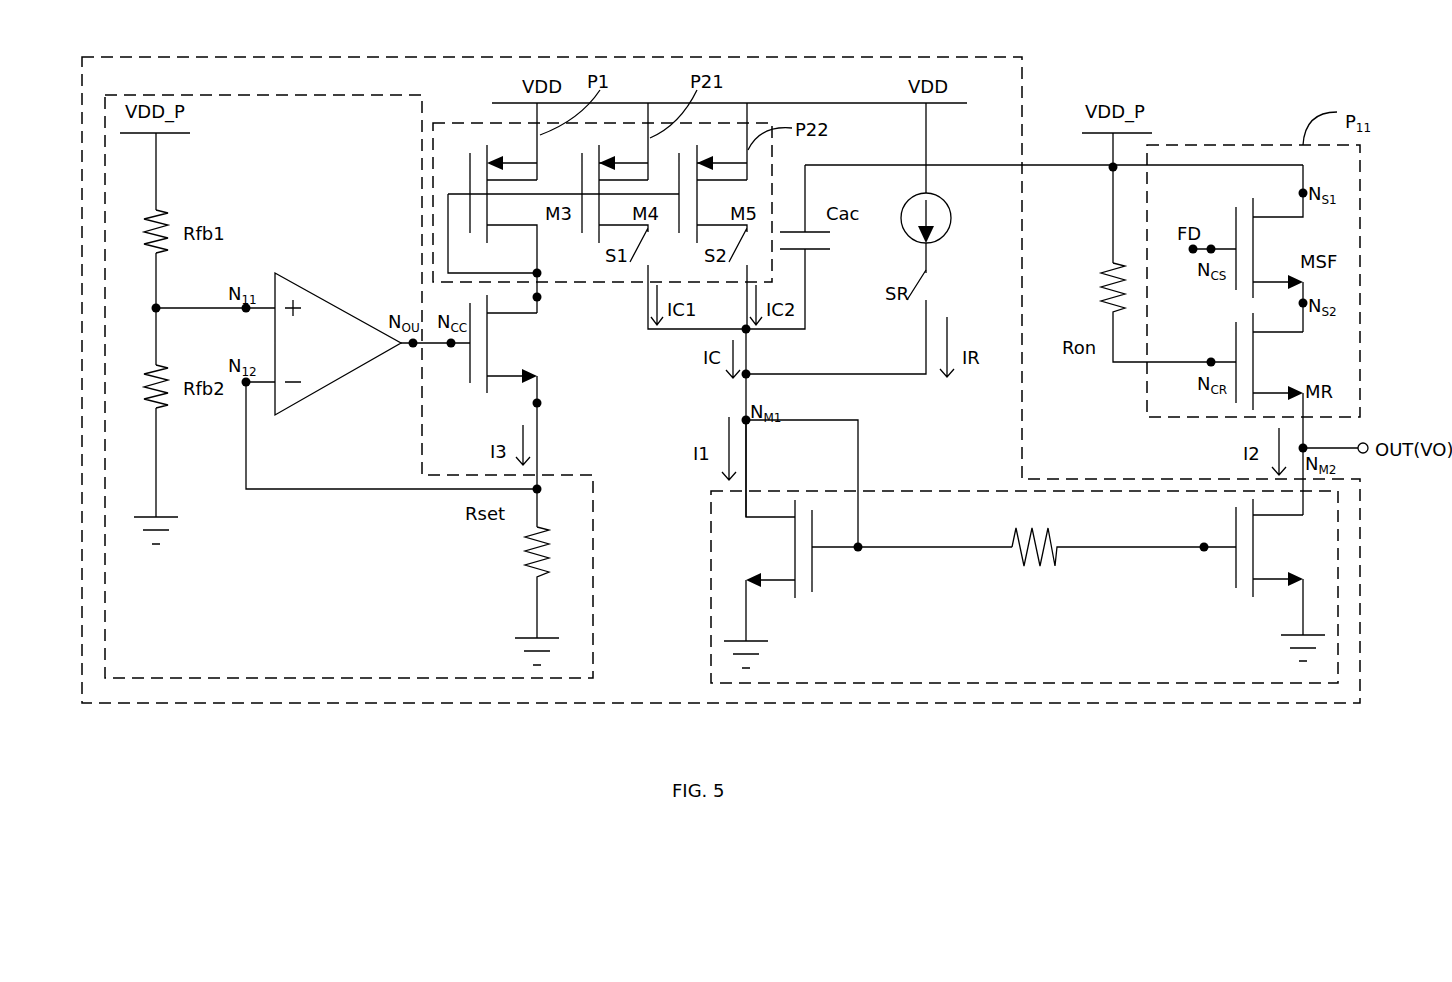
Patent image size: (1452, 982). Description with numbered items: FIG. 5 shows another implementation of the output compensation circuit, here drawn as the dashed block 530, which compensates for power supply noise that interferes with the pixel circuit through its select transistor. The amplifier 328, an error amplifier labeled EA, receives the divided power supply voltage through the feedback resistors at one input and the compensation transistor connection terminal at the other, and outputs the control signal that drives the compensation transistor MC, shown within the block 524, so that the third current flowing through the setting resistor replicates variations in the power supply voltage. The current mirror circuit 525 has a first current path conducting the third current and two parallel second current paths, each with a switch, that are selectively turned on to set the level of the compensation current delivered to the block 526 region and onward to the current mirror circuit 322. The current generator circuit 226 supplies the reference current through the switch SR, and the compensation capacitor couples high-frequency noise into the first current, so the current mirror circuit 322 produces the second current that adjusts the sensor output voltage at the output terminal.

The bias current generating circuit 530 is at (800, 57).
The amplifier 328 is at (318, 296).
The current mirror transistor MC 524 is at (598, 317).
The current mirror circuit 525 is at (551, 282).
The second node NC2 526 is at (557, 473).
The current generator circuit 226 is at (950, 218).
The current mirror circuit 322 is at (1338, 583).